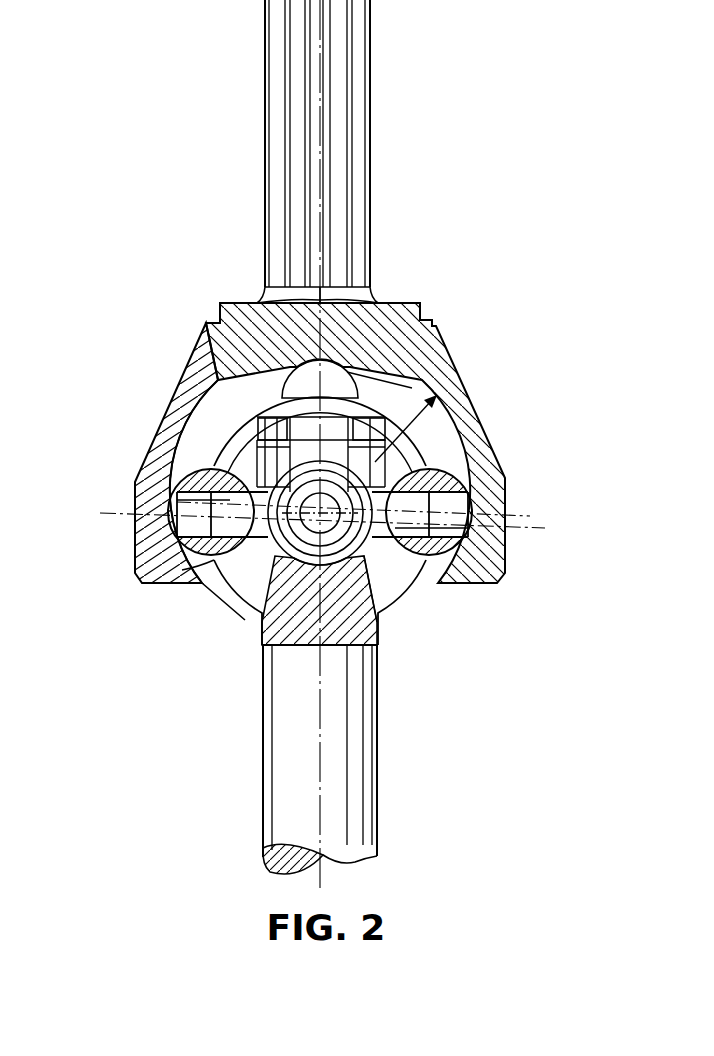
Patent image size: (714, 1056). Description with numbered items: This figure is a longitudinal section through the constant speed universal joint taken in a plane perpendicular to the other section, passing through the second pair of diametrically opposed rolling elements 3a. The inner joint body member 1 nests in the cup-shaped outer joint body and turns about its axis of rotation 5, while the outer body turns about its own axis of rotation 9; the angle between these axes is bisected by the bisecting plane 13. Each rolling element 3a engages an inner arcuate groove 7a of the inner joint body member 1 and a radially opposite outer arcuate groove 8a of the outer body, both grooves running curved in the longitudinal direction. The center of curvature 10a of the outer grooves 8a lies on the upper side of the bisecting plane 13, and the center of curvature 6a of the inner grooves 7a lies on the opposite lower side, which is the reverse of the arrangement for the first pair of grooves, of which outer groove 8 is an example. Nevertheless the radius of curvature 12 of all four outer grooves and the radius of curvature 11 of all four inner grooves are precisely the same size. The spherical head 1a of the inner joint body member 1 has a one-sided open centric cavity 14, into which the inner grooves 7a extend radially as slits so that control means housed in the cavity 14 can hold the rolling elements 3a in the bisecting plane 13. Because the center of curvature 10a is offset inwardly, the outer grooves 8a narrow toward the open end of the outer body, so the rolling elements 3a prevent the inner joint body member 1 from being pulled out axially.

The inner joint body member 1 is at (328, 650).
The spherical head 1a is at (370, 600).
The rolling elements 3a is at (230, 472).
The axis of rotation 5 is at (322, 725).
The center of curvature 6a is at (277, 567).
The inner arcuate groove 7a is at (266, 643).
The outer arcuate groove 8 is at (217, 322).
The outer arcuate groove 8a is at (228, 398).
The axis of rotation 9 is at (320, 162).
The center of curvature 10a is at (215, 430).
The radius of curvature 11 is at (222, 582).
The radius of curvature 12 is at (305, 382).
The bisecting plane 13 is at (177, 502).
The centric cavity 14 is at (402, 538).